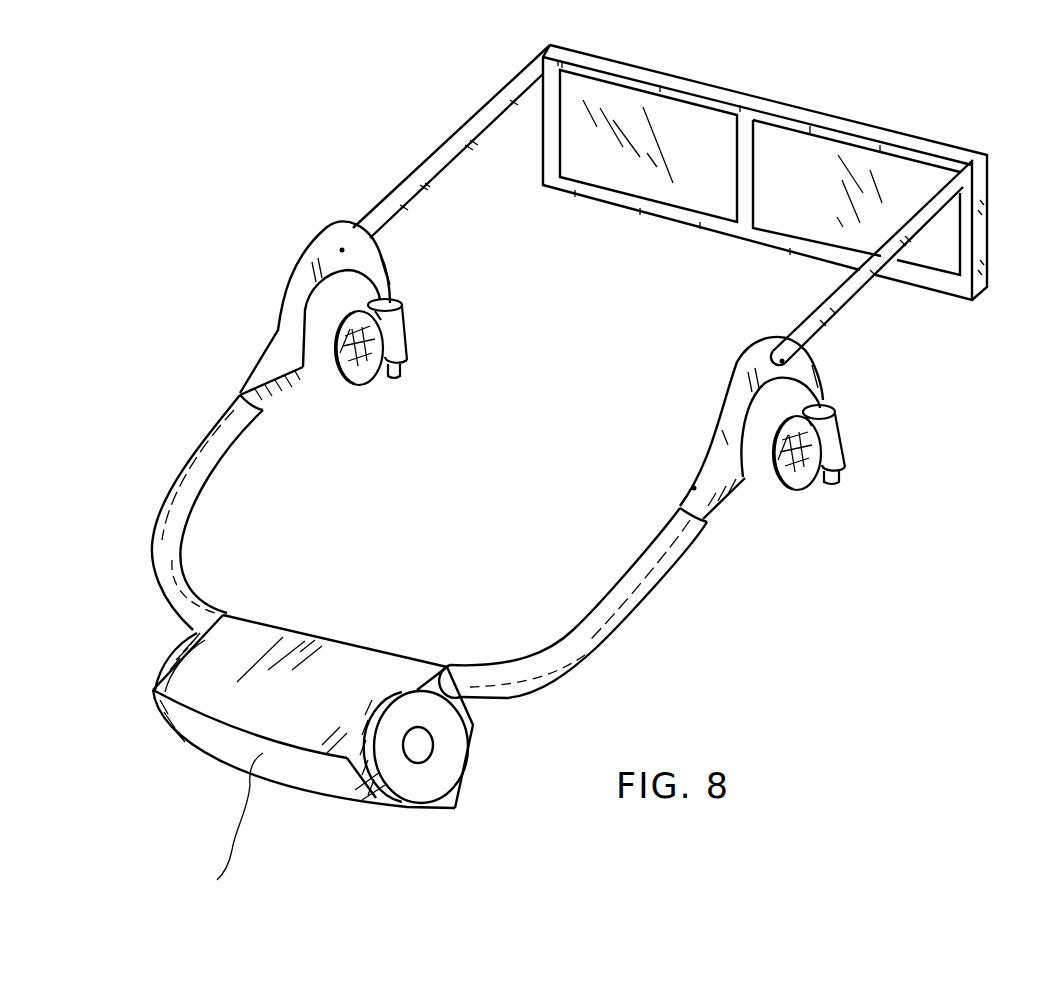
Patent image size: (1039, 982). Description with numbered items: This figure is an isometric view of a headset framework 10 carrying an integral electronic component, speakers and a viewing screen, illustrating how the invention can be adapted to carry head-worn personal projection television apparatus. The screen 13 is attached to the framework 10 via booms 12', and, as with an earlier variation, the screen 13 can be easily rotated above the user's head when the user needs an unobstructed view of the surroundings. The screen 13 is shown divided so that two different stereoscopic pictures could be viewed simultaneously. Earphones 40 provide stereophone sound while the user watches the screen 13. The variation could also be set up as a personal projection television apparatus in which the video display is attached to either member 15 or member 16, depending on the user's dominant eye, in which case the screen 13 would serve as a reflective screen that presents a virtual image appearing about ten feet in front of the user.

The framework 10 is at (451, 589).
The booms 12' is at (663, 205).
The screen 13 is at (722, 93).
The member 15 is at (300, 288).
The member 16 is at (803, 373).
The earphones 40 is at (805, 488).